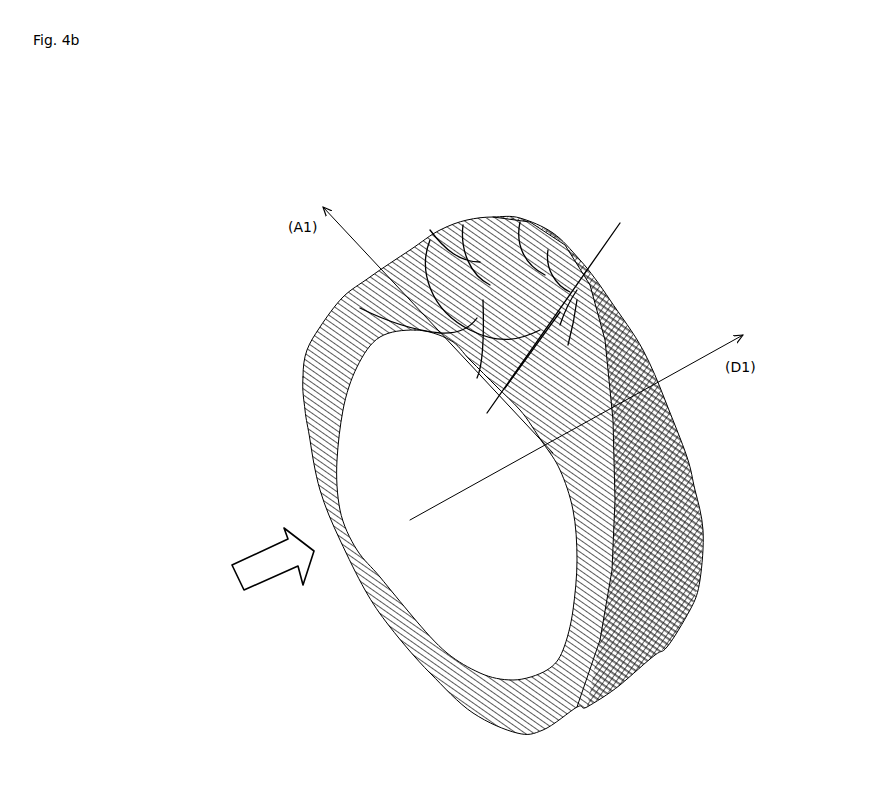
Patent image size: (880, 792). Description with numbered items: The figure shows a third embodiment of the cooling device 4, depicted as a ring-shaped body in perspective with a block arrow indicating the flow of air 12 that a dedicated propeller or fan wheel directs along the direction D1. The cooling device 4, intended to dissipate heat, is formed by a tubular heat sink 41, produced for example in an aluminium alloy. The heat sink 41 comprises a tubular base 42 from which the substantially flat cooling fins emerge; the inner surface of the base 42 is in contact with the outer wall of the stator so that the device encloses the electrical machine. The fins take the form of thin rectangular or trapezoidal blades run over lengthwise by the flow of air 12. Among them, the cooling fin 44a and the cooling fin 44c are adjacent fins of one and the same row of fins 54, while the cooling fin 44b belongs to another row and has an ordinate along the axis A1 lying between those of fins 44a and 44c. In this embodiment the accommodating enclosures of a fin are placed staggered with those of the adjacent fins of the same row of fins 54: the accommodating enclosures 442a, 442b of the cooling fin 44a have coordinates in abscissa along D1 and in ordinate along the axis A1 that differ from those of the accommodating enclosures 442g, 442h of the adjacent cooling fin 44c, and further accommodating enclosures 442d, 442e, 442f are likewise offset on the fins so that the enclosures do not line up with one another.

The cooling device 4 is at (428, 475).
The flow of air 12 is at (287, 577).
The tubular heat sink 41 is at (302, 473).
The tubular base 42 is at (373, 350).
The cooling fin 44a is at (430, 240).
The cooling fin 44b is at (360, 308).
The cooling fin 44c is at (566, 311).
The row of fins 54 is at (505, 388).
The accommodating enclosure 442a is at (430, 230).
The accommodating enclosure 442b is at (463, 225).
The accommodating enclosure 442d is at (477, 378).
The accommodating enclosure 442e is at (520, 222).
The accommodating enclosure 442f is at (548, 250).
The accommodating enclosure 442g is at (577, 300).
The accommodating enclosure 442h is at (577, 290).